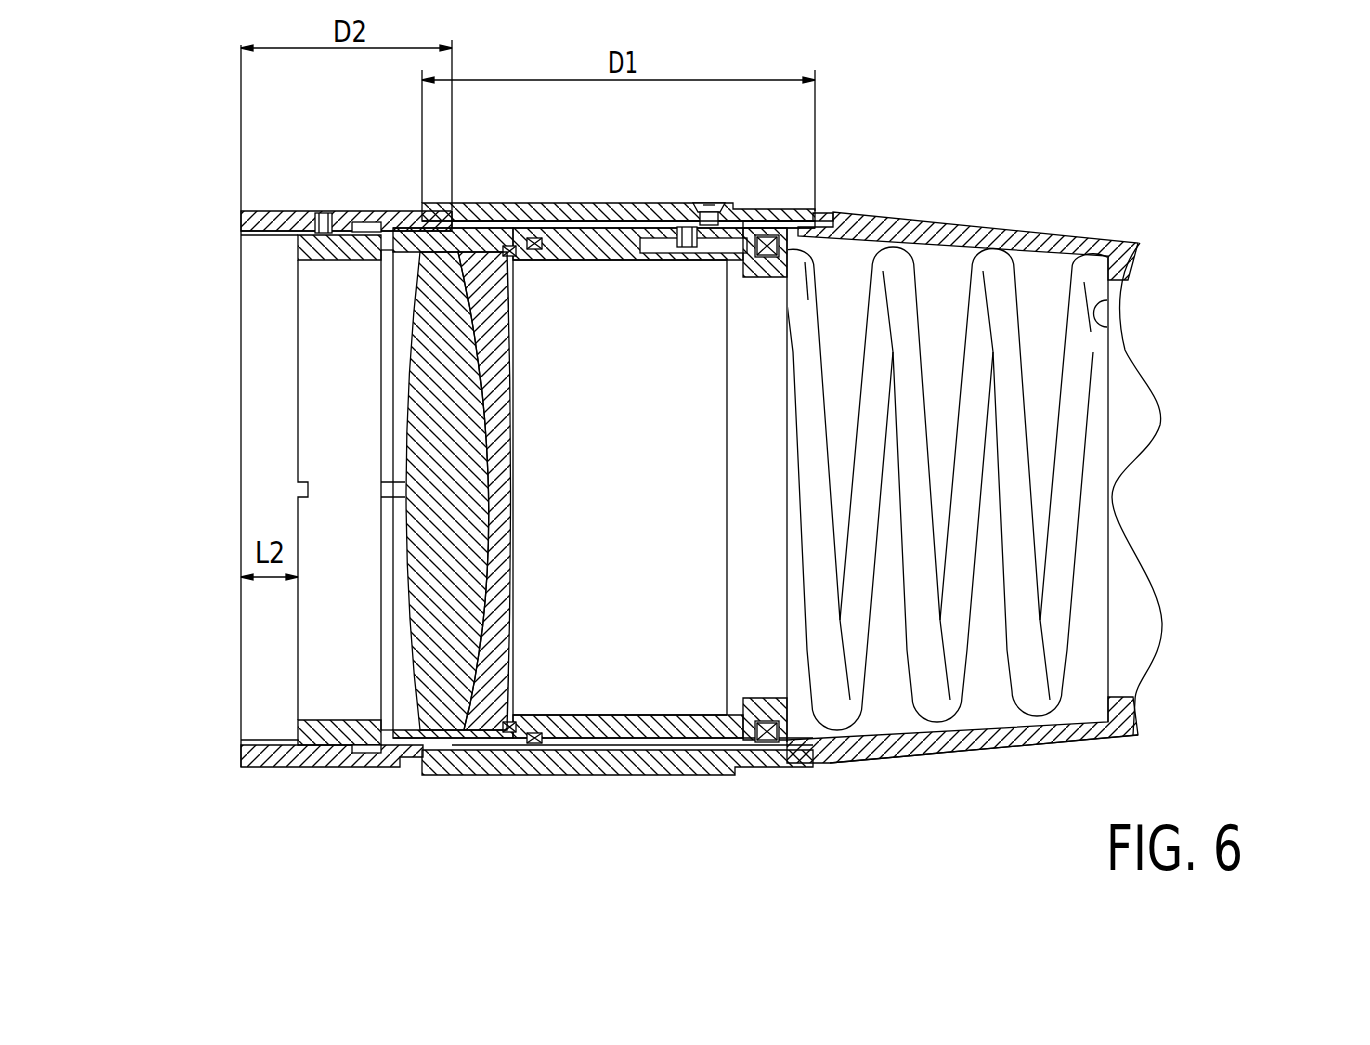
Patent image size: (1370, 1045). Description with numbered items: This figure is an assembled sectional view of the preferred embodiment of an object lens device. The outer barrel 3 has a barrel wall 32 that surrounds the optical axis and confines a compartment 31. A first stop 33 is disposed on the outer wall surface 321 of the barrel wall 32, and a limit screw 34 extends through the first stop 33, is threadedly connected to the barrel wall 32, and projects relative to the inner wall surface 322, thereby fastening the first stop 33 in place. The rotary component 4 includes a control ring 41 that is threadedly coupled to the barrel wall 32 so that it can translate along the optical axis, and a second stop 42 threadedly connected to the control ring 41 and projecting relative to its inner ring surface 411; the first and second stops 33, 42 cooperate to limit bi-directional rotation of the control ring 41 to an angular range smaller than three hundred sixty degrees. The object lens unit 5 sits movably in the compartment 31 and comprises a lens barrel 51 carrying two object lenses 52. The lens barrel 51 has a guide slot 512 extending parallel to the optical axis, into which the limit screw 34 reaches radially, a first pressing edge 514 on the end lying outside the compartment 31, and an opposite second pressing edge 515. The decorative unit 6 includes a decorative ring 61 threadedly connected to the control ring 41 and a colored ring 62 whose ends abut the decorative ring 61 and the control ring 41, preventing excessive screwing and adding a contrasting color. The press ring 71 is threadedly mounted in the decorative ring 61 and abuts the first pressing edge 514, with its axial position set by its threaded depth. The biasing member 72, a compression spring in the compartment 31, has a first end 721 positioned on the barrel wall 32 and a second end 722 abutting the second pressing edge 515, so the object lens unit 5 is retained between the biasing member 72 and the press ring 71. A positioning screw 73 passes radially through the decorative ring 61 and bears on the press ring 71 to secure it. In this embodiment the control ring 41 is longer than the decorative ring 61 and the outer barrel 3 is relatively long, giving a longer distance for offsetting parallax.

The outer barrel 3 is at (873, 198).
The compartment 31 is at (890, 735).
The barrel wall 32 is at (940, 742).
The outer wall surface 321 is at (585, 220).
The inner wall surface 322 is at (822, 215).
The first stop 33 is at (667, 238).
The limit screw 34 is at (688, 227).
The rotary component 4 is at (477, 197).
The control ring 41 is at (526, 226).
The inner ring surface 411 is at (760, 220).
The second stop 42 is at (709, 203).
The object lens unit 5 is at (548, 748).
The lens barrel 51 is at (600, 727).
The guide slot 512 is at (648, 238).
The first pressing edge 514 is at (358, 228).
The second pressing edge 515 is at (818, 762).
The object lenses 52 is at (425, 665).
The decorative unit 6 is at (273, 785).
The decorative ring 61 is at (335, 757).
The colored ring 62 is at (403, 243).
The press ring 71 is at (342, 245).
The biasing member 72 is at (1020, 505).
The first end 721 is at (1092, 273).
The second end 722 is at (808, 283).
The positioning screw 73 is at (320, 212).